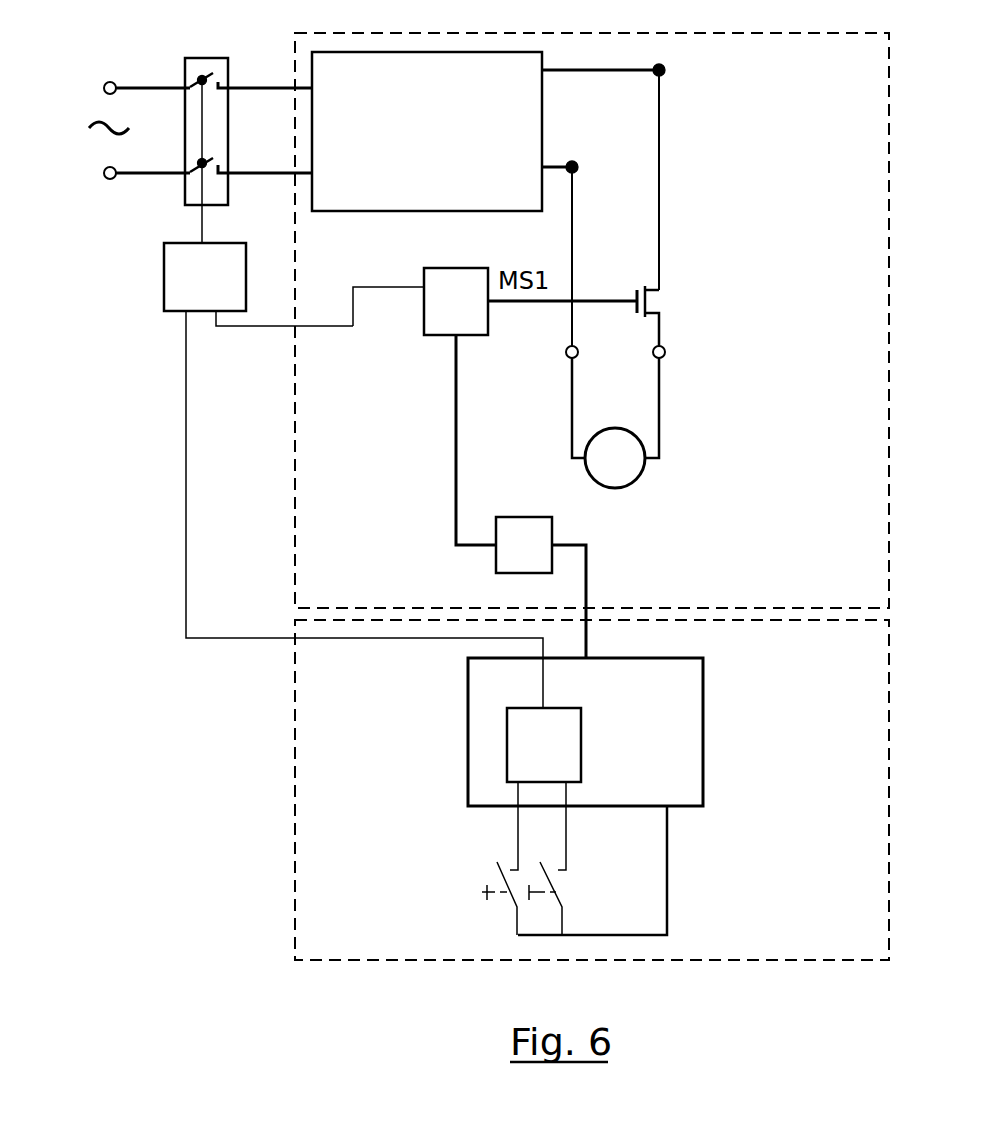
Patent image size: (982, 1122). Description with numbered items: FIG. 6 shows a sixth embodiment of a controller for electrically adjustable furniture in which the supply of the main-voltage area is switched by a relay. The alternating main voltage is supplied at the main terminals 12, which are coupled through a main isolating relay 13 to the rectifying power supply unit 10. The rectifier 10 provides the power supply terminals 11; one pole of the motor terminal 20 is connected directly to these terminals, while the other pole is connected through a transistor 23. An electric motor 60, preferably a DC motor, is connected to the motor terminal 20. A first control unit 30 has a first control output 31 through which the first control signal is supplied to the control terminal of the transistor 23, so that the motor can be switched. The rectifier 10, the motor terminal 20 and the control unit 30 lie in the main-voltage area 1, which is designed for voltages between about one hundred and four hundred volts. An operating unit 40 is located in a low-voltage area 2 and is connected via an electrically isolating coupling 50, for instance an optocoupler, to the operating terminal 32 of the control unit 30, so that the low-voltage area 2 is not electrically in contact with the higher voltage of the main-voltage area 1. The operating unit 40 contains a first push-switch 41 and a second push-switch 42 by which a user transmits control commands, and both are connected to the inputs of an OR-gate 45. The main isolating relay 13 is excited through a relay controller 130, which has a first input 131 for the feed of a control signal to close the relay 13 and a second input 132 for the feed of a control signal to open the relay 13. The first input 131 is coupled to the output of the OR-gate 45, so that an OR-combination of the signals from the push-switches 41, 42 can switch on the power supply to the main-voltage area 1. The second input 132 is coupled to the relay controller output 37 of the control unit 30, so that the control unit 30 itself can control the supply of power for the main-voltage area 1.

The main-voltage area 1 is at (890, 98).
The low-voltage area 2 is at (890, 645).
The rectifying power supply unit 10 is at (322, 212).
The power supply terminals 11 is at (657, 73).
The main terminals 12 is at (102, 98).
The main isolating relay 13 is at (215, 205).
The motor terminal 20 is at (655, 360).
The transistor 23 is at (640, 273).
The first control unit 30 is at (424, 305).
The first control output 31 is at (488, 305).
The operating terminal 32 is at (452, 335).
The relay controller output 37 is at (424, 285).
The operating unit 40 is at (437, 793).
The first push-switch 41 is at (562, 888).
The second push-switch 42 is at (482, 892).
The OR-gate 45 is at (581, 753).
The electrically isolating coupling 50 is at (535, 517).
The electric motor 60 is at (645, 467).
The relay controller 130 is at (164, 268).
The first input 131 is at (185, 312).
The second input 132 is at (215, 315).